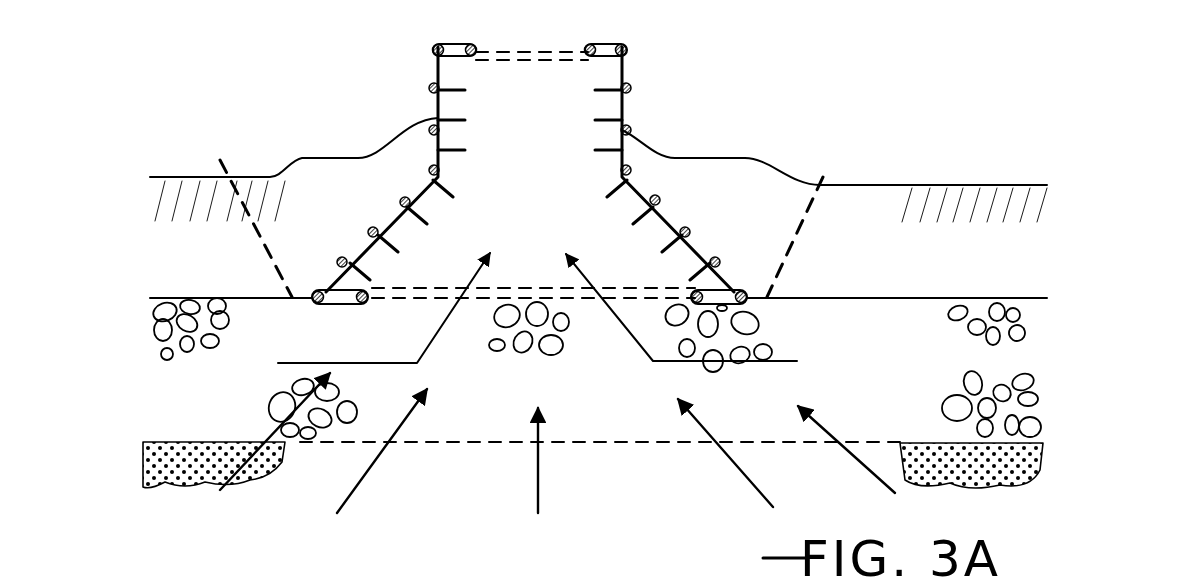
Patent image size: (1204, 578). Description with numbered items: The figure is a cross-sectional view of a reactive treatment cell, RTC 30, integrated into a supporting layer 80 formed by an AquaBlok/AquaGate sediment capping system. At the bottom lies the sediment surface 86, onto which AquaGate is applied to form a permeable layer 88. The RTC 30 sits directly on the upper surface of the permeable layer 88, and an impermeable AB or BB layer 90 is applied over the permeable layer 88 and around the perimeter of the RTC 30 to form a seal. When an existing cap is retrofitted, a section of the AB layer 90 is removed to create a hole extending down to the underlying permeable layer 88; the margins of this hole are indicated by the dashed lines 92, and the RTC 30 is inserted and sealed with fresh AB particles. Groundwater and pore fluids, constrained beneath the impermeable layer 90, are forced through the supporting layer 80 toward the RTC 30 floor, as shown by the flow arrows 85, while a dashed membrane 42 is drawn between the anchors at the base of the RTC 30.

The RTC 30 is at (388, 85).
The membrane layer 42 is at (543, 288).
The supporting layer 80 is at (1094, 295).
The flow arrows 85 is at (540, 465).
The sediment surface 86 is at (1065, 448).
The permeable layer 88 is at (1065, 305).
The AB layer 90 is at (1065, 182).
The dashed lines 92 is at (807, 230).